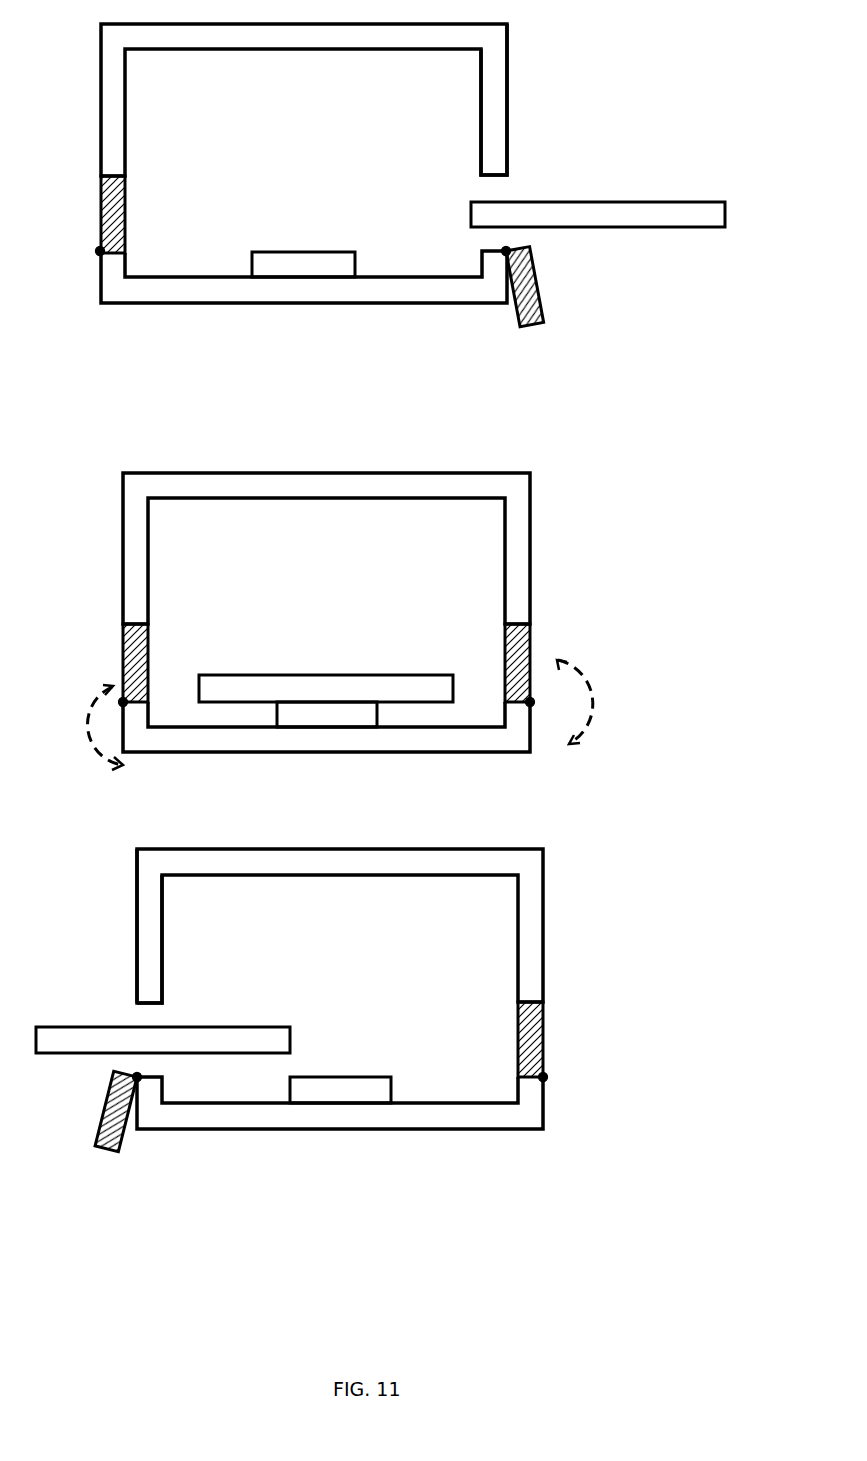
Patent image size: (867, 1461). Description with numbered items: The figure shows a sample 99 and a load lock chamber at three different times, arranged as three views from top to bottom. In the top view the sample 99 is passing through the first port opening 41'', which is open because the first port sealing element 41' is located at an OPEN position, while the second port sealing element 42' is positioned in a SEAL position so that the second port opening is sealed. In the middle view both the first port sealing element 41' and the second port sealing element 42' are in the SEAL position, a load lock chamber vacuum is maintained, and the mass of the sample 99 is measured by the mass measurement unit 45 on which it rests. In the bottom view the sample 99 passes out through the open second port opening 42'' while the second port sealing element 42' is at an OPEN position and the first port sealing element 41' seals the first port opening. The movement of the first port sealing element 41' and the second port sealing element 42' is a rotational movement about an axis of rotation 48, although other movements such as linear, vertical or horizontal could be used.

The first port opening 41'' is at (456, 103).
The first port sealing element 41' is at (538, 668).
The second port sealing element 42' is at (125, 671).
The second port opening 42'' is at (178, 933).
The mass measurement unit 45 is at (293, 252).
The axis of rotation 48 is at (100, 250).
The sample 99 is at (683, 202).